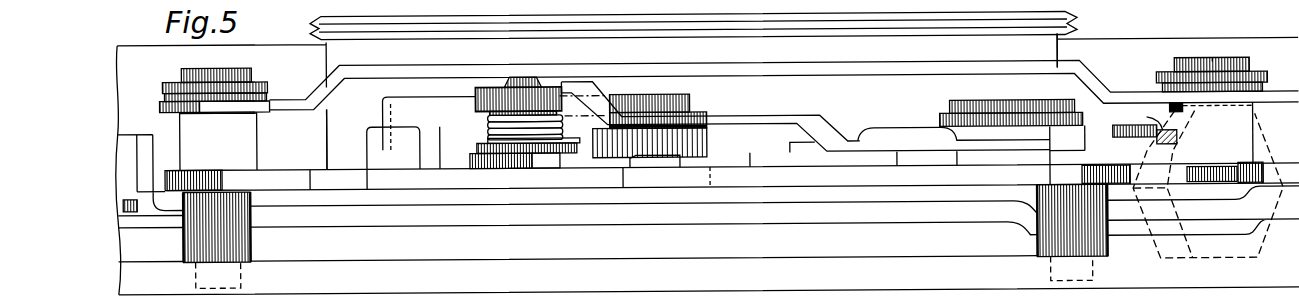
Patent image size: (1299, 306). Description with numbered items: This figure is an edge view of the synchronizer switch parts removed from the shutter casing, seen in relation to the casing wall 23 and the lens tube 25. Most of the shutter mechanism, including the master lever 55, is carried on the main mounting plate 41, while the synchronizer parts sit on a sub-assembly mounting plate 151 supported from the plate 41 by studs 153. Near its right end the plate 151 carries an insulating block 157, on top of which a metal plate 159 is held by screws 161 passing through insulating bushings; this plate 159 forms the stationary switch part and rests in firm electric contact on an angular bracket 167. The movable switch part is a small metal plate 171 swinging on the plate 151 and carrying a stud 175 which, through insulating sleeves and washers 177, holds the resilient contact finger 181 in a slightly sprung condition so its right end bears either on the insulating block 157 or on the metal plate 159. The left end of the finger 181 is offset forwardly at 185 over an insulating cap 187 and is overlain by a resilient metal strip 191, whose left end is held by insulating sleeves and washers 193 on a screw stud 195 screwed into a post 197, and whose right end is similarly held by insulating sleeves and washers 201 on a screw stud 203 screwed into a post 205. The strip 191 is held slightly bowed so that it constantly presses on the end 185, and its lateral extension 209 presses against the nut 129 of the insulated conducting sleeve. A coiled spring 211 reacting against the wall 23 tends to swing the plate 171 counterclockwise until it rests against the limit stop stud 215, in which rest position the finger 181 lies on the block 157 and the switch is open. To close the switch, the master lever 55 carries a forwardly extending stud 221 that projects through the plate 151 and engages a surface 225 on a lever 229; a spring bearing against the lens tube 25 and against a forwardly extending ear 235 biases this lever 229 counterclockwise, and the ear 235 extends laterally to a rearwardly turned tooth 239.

The casing wall 23 is at (1160, 41).
The lens tube 25 is at (1053, 52).
The mounting plate 41 is at (593, 282).
The master lever 55 is at (647, 215).
The nut 129 is at (1223, 261).
The sub-assembly mounting plate 151 is at (263, 175).
The studs 153 is at (242, 251).
The insulating block 157 is at (810, 158).
The metal plate 159 is at (861, 144).
The screws 161 is at (992, 102).
The angular bracket 167 is at (1193, 144).
The metal plate 171 is at (728, 151).
The stud 175 is at (676, 98).
The insulating sleeves and washers 177 is at (696, 111).
The movable electric contact member 181 is at (747, 122).
The offset end 185 is at (528, 76).
The insulating cap 187 is at (474, 110).
The metal strip 191 is at (774, 64).
The insulating sleeves and washers 193 is at (283, 72).
The screw stud 195 is at (250, 53).
The post 197 is at (245, 140).
The insulating sleeves and washers 201 is at (1167, 70).
The screw stud 203 is at (1249, 64).
The post 205 is at (1250, 141).
The lateral extension 209 is at (1190, 136).
The spring 211 is at (545, 154).
The stud 215 is at (633, 157).
The stud 221 is at (367, 140).
The surface 225 is at (360, 161).
The lever 229 is at (495, 97).
The ear 235 is at (386, 109).
The tooth 239 is at (636, 101).